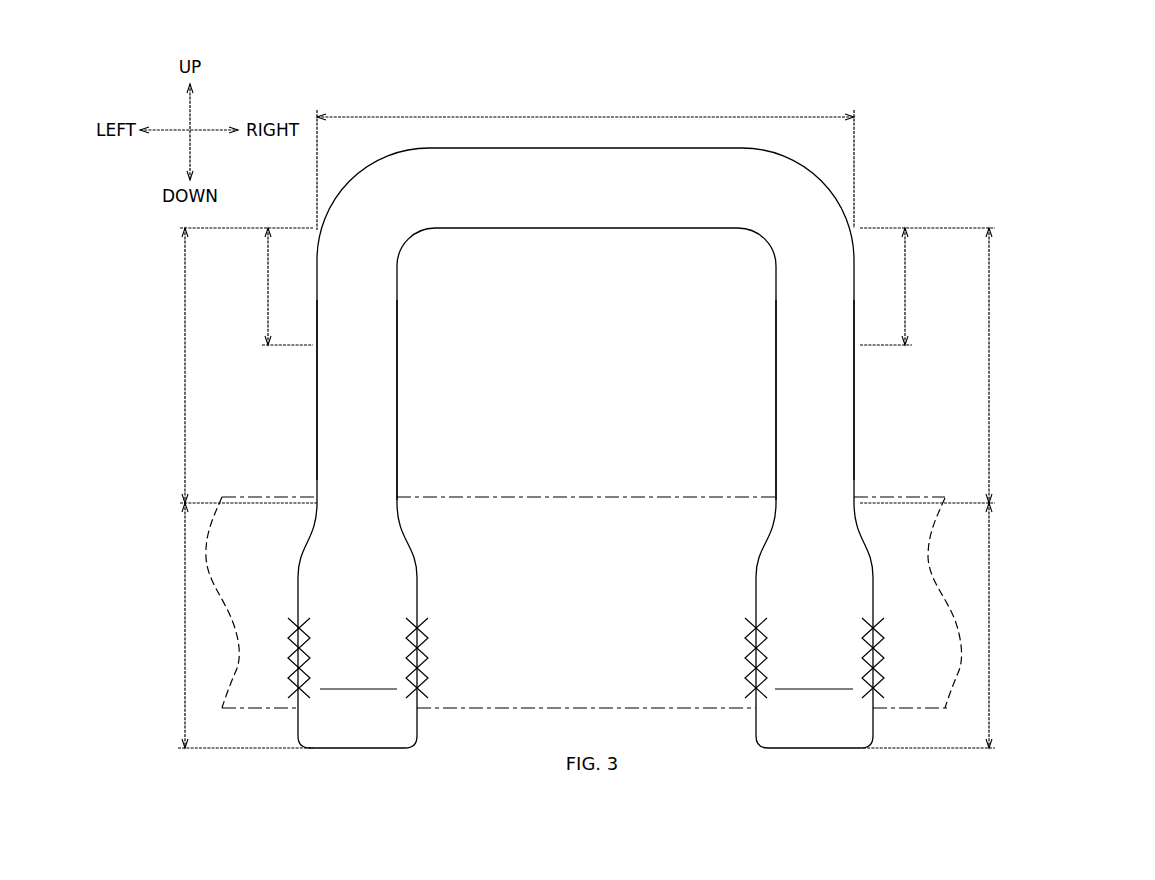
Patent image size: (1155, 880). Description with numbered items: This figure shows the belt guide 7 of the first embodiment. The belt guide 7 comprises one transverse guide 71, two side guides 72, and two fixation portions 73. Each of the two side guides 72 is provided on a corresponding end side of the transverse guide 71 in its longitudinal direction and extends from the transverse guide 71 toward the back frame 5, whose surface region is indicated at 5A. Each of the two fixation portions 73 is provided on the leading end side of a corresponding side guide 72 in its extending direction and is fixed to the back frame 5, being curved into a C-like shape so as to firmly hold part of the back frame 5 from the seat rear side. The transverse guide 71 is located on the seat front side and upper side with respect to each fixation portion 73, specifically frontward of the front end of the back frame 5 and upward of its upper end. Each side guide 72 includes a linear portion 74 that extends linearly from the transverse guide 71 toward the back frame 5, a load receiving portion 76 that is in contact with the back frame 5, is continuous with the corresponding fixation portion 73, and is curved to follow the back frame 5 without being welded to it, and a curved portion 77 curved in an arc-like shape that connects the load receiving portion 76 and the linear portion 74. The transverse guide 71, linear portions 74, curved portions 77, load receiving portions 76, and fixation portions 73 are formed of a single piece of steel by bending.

The belt guide 7 is at (890, 165).
The back frame 5 is at (584, 550).
The center line of sheet member 5A is at (628, 497).
The transverse guide 71 is at (587, 117).
The side guide 72 is at (185, 365).
The fixation portion 73 is at (185, 625).
The linear portion 74 is at (268, 288).
The load receiving portion 76 is at (385, 487).
The curved portion 77 is at (383, 408).